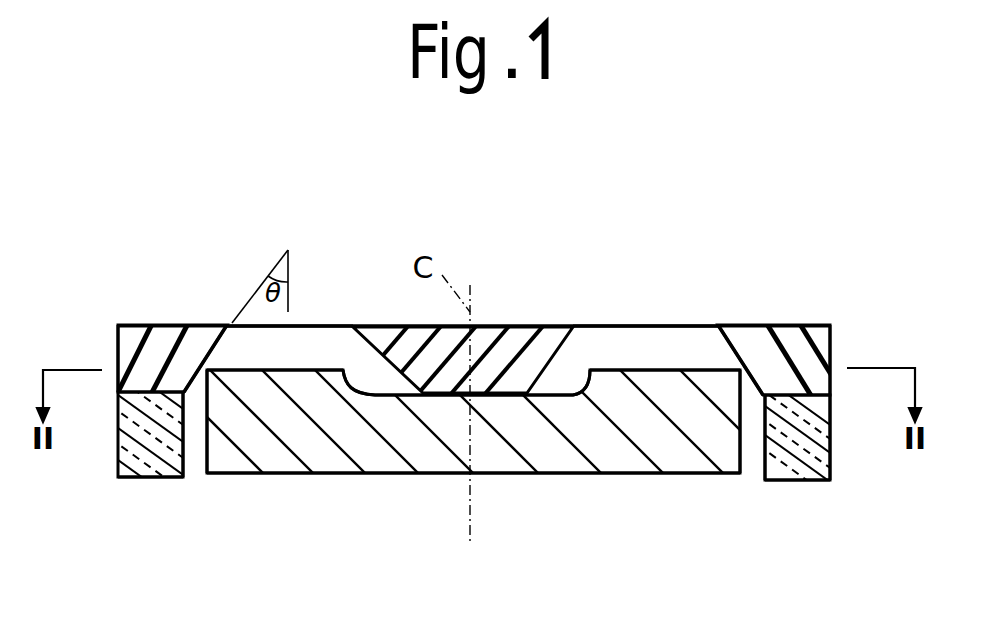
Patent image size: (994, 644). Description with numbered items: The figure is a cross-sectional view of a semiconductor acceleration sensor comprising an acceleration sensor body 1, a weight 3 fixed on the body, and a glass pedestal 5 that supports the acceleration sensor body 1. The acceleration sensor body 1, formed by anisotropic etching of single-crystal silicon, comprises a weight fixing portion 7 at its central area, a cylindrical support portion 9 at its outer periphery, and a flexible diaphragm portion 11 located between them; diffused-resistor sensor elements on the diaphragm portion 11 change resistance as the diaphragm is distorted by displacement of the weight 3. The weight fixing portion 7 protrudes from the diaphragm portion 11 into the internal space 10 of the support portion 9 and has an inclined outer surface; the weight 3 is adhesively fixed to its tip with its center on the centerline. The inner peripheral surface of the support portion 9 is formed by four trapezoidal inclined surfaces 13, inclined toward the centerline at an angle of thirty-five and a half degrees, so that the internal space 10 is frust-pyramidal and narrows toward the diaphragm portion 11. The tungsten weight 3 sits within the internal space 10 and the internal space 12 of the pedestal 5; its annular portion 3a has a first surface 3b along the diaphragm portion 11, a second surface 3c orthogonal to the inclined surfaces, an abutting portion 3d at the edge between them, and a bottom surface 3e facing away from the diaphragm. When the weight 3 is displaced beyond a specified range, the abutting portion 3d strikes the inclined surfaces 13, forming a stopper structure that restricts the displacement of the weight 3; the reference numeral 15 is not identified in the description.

The acceleration sensor body 1 is at (112, 358).
The weight 3 is at (396, 438).
The annular portion 3a is at (297, 368).
The first surface 3b is at (298, 372).
The second surface 3c is at (207, 398).
The abutting portion 3d is at (177, 323).
The bottom surface 3e is at (440, 473).
The glass pedestal 5 is at (832, 440).
The weight fixing portion 7 is at (495, 325).
The support portion 9 is at (130, 330).
The internal space 10 is at (348, 334).
The diaphragm portion 11 is at (330, 327).
The internal space 12 is at (198, 448).
The inclined surfaces 13 is at (222, 323).
The recess 15 is at (590, 383).